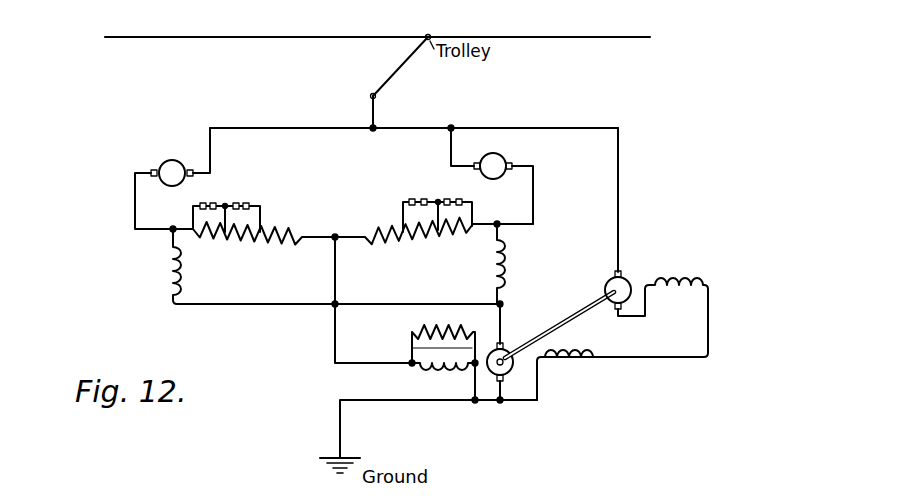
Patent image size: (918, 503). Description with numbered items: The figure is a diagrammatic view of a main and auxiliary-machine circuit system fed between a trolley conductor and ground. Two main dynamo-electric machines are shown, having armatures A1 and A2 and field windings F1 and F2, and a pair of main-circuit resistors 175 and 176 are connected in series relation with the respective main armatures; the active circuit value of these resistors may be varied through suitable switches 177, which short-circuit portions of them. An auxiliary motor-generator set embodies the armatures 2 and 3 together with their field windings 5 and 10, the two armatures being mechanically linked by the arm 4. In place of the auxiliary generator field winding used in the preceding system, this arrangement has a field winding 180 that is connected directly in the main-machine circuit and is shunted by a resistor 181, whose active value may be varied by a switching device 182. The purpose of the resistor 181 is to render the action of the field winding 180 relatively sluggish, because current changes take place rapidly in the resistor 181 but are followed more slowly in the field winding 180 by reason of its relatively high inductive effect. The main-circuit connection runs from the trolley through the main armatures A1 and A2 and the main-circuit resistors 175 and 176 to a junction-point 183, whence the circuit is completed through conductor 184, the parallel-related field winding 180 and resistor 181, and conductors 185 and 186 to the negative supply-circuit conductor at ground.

The armature of main dynamo-electric machine A1 is at (162, 163).
The armature of main dynamo-electric machine A2 is at (506, 160).
The field winding F1 is at (160, 273).
The field winding F2 is at (508, 266).
The main-circuit resistor 175 is at (266, 243).
The main-circuit resistor 176 is at (407, 238).
The switches 177 is at (242, 203).
The junction-point 183 is at (335, 236).
The conductor 184 is at (338, 288).
The resistor 181 is at (452, 330).
The switching device 182 is at (412, 348).
The field winding 180 is at (420, 369).
The conductor 185 is at (474, 390).
The conductor 186 is at (428, 402).
The auxiliary generator armature 3 is at (508, 354).
The armature arm 4 is at (566, 320).
The auxiliary motor armature 2 is at (625, 280).
The field winding 5 is at (692, 278).
The field winding 10 is at (575, 360).